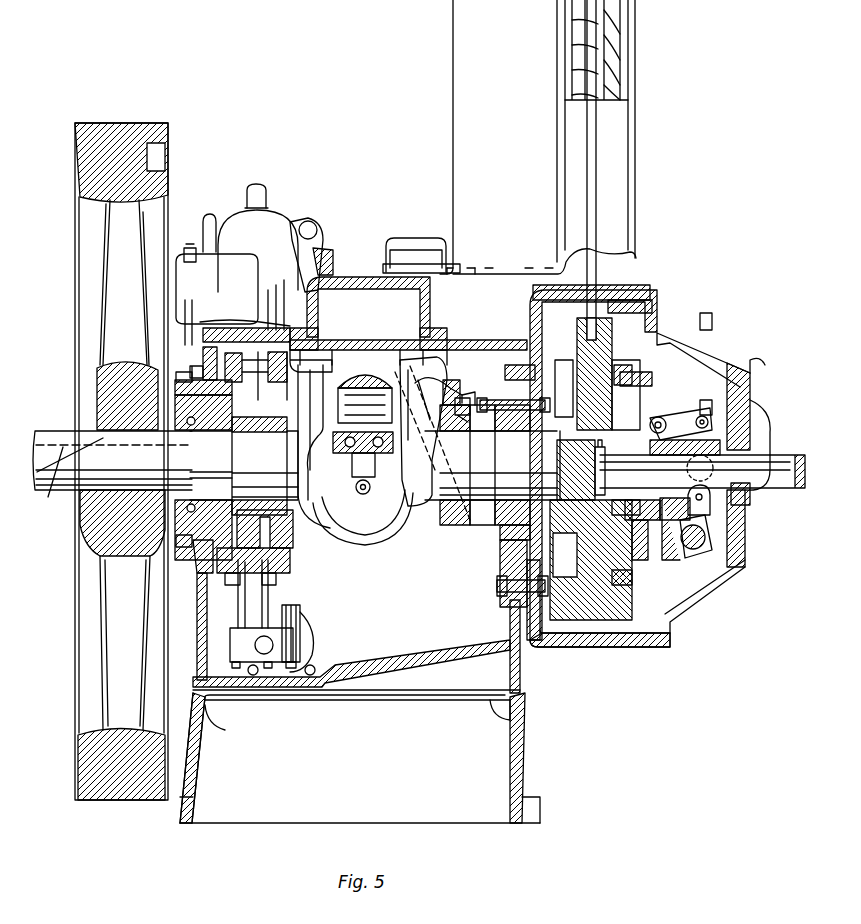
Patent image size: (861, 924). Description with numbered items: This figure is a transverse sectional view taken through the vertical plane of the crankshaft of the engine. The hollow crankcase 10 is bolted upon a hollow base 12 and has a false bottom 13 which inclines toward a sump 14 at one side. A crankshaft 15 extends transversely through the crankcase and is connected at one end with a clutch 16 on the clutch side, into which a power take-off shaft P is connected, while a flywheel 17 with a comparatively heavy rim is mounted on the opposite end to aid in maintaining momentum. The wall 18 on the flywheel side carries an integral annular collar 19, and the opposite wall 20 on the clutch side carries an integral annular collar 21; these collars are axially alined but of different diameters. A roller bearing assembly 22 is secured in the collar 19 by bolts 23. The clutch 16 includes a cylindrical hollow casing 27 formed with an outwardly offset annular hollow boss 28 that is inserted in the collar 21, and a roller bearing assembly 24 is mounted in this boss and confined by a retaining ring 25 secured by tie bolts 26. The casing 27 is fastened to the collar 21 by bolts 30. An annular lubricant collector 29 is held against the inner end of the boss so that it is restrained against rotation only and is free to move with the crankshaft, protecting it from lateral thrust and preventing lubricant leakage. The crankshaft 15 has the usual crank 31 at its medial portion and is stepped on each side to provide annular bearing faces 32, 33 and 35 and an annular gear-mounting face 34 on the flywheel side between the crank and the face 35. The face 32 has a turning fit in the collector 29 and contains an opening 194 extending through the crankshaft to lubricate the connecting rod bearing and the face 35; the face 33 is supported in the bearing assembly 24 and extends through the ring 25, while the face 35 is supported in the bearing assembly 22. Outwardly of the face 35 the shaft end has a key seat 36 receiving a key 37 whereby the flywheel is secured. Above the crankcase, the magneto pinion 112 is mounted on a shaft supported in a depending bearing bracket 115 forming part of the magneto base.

The crankcase 10 is at (525, 690).
The hollow base 12 is at (525, 752).
The false bottom 13 is at (443, 654).
The sump 14 is at (246, 690).
The crankshaft 15 is at (436, 510).
The clutch 16 is at (612, 645).
The flywheel 17 is at (80, 796).
The wall 18 is at (197, 645).
The annular collar 19 is at (205, 560).
The wall 20 is at (508, 624).
The annular collar 21 is at (500, 385).
The roller bearing assembly 22 is at (246, 385).
The bolts 23 is at (185, 375).
The roller bearing assembly 24 is at (475, 388).
The retaining ring 25 is at (540, 430).
The tie bolts 26 is at (575, 358).
The cylindrical hollow casing 27 is at (645, 294).
The annular hollow boss 28 is at (500, 555).
The annular lubricant collector 29 is at (467, 522).
The bolts 30 is at (550, 372).
The crank 31 is at (386, 535).
The annular bearing face 32 is at (483, 447).
The annular bearing face 33 is at (508, 466).
The annular gear-mounting face 34 is at (242, 462).
The annular bearing face 35 is at (226, 446).
The key seat 36 is at (46, 483).
The key 37 is at (57, 432).
The magneto pinion 112 is at (318, 345).
The depending bearing bracket 115 is at (300, 370).
The opening 194 is at (429, 465).
The power take-off shaft P is at (778, 460).